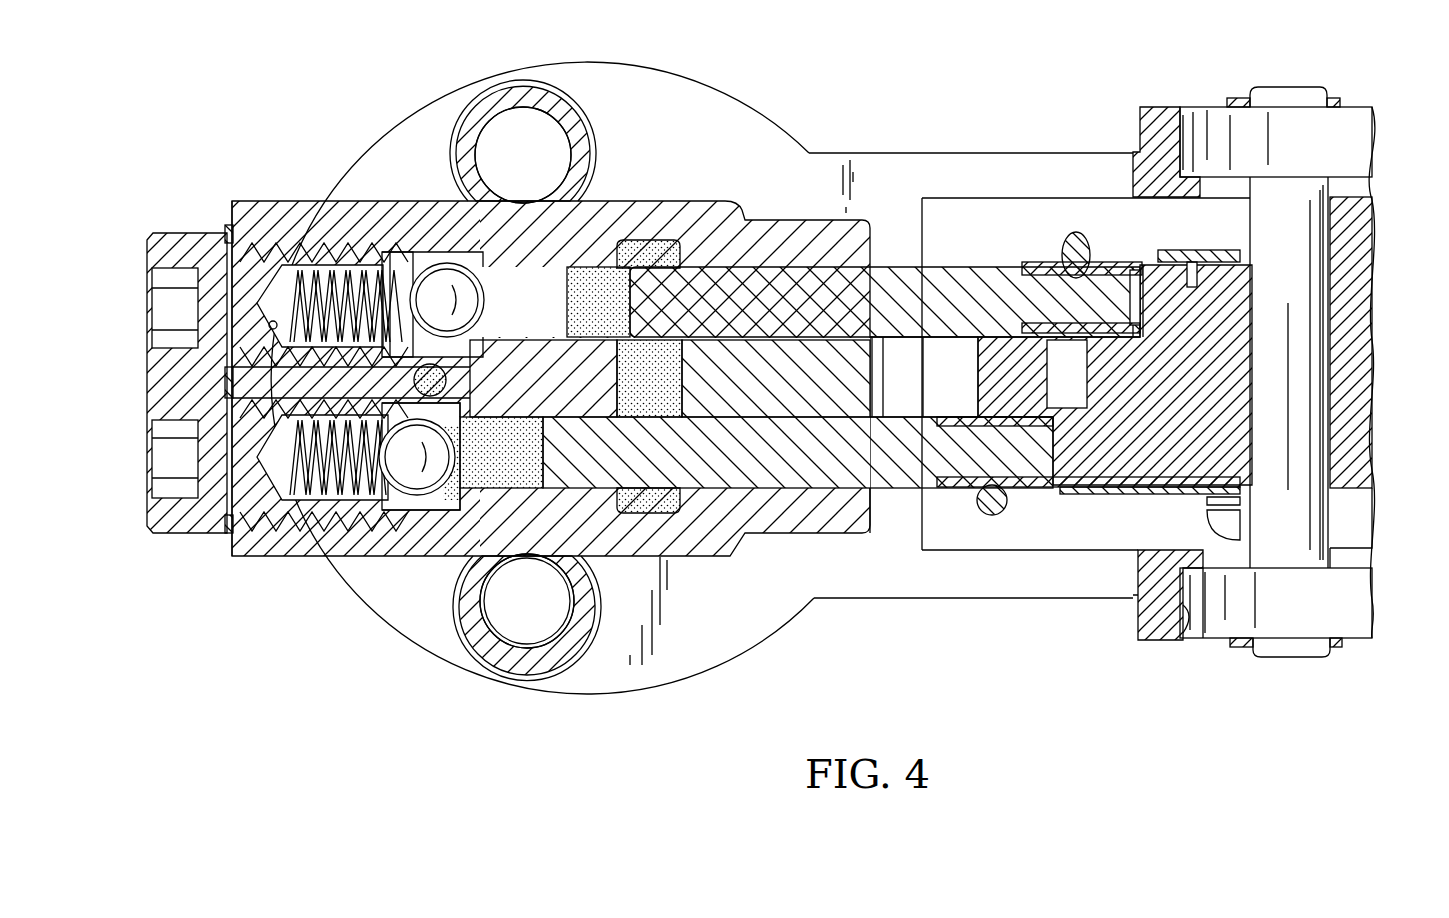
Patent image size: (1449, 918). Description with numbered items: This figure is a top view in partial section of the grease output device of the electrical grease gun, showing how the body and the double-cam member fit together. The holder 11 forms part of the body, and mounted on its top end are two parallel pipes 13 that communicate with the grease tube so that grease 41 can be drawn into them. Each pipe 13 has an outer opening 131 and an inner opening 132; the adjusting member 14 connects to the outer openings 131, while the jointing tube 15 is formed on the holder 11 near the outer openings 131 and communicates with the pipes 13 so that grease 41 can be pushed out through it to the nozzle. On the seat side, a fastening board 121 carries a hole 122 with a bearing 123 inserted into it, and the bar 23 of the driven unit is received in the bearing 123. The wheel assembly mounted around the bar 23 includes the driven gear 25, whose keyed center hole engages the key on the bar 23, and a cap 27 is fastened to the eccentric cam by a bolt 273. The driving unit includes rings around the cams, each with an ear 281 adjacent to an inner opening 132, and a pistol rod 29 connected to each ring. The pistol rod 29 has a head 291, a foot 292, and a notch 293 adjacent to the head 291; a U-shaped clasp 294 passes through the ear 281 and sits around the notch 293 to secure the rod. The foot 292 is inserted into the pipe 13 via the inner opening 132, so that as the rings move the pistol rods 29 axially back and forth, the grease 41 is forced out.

The holder 11 is at (584, 693).
The pipe 13 is at (688, 537).
The outer opening 131 is at (230, 557).
The inner opening 132 is at (873, 503).
The adjusting member 14 is at (180, 220).
The jointing tube 15 is at (232, 378).
The grease 41 is at (440, 556).
The pistol rod 29 is at (765, 290).
The foot 292 is at (603, 265).
The notch 293 is at (1055, 333).
The U-shaped clasp 294 is at (1068, 246).
The ear 281 is at (1043, 270).
The head 291 is at (1150, 292).
The driven gear 25 is at (1033, 377).
The cap 27 is at (1360, 252).
The bolt 273 is at (1225, 520).
The bar 23 is at (1325, 398).
The fastening board 121 is at (1150, 623).
The hole 122 is at (1190, 633).
The bearing 123 is at (1228, 630).